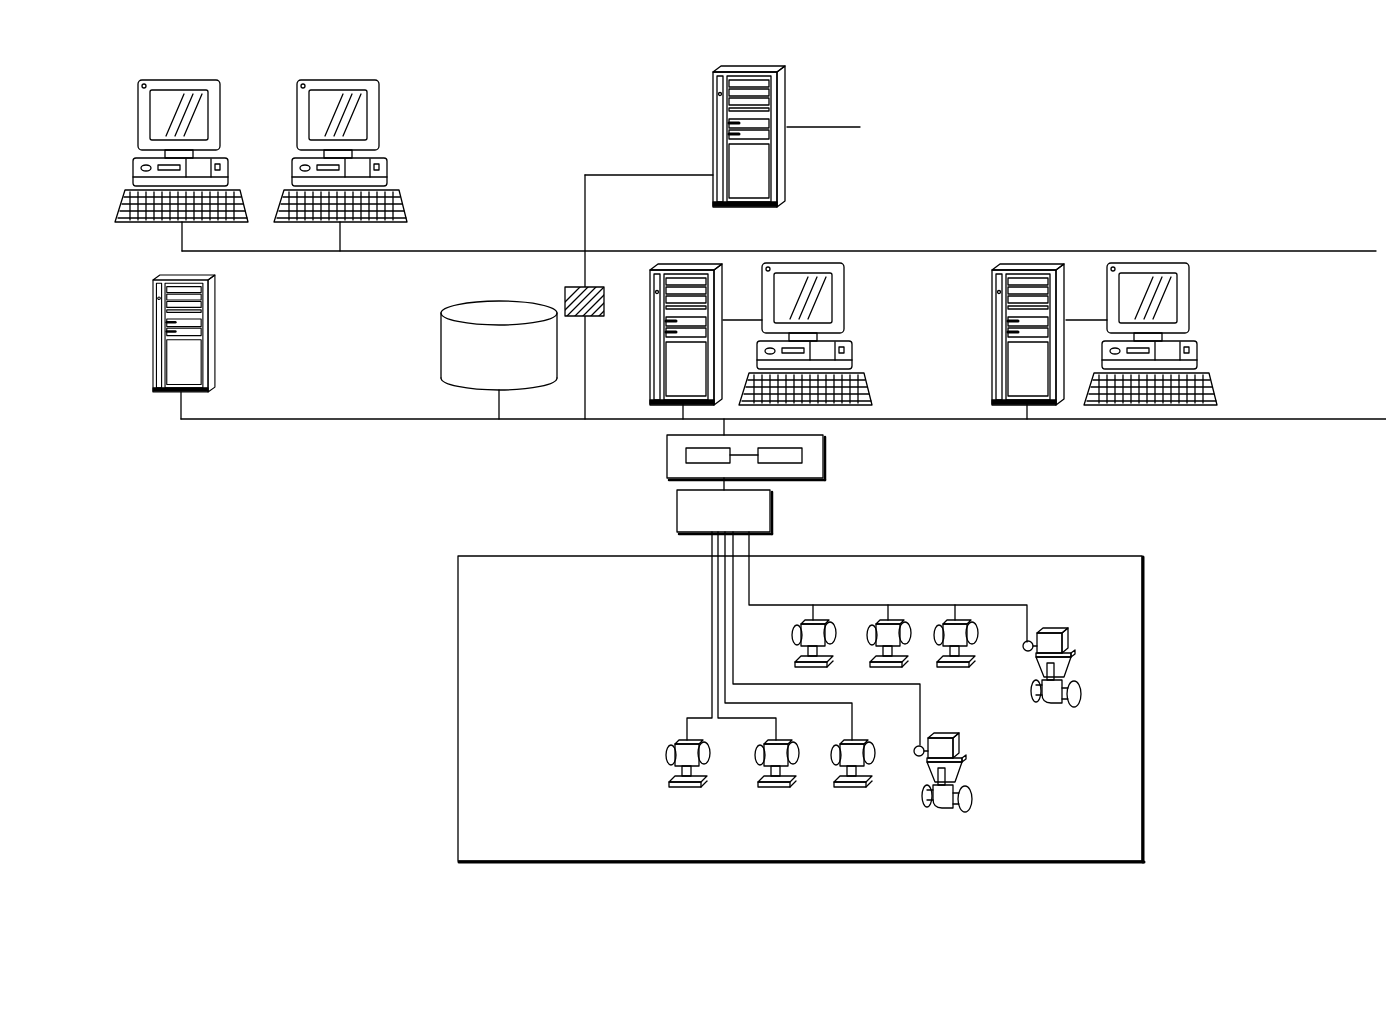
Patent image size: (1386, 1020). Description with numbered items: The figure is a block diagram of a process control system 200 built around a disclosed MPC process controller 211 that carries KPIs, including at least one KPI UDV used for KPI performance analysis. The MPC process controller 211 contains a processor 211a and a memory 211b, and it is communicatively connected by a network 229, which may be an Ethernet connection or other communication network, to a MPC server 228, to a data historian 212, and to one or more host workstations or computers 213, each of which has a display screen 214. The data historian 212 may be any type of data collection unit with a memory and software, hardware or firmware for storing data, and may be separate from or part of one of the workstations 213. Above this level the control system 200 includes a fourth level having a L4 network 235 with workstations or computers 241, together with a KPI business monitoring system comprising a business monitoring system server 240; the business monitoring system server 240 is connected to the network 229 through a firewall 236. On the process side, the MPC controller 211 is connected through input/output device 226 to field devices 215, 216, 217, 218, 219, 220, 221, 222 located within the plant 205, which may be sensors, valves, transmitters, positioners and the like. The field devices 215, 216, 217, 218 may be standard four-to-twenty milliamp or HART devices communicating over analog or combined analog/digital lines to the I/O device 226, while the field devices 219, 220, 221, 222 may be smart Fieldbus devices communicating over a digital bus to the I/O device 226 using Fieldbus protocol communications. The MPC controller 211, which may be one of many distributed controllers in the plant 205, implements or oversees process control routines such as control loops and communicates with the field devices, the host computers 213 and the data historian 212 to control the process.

The process control system 200 is at (1100, 174).
The plant 205 is at (1144, 698).
The MPC process controller 211 is at (745, 484).
The processor 211a is at (686, 459).
The memory 211b is at (777, 463).
The data historian 212 is at (440, 347).
The host workstations or computers 213 is at (650, 300).
The display screen 214 is at (845, 302).
The field device 215 is at (677, 774).
The field device 216 is at (767, 774).
The field device 217 is at (843, 774).
The field device 218 is at (955, 737).
The field device 219 is at (818, 618).
The field device 220 is at (893, 618).
The field device 221 is at (960, 618).
The field device 222 is at (1064, 632).
The input/output device 226 is at (677, 510).
The MPC server 228 is at (275, 356).
The network 229 is at (1000, 421).
The L4 network 235 is at (779, 237).
The firewall 236 is at (565, 300).
The business monitoring system server 240 is at (746, 65).
The workstations or computers 241 is at (295, 168).